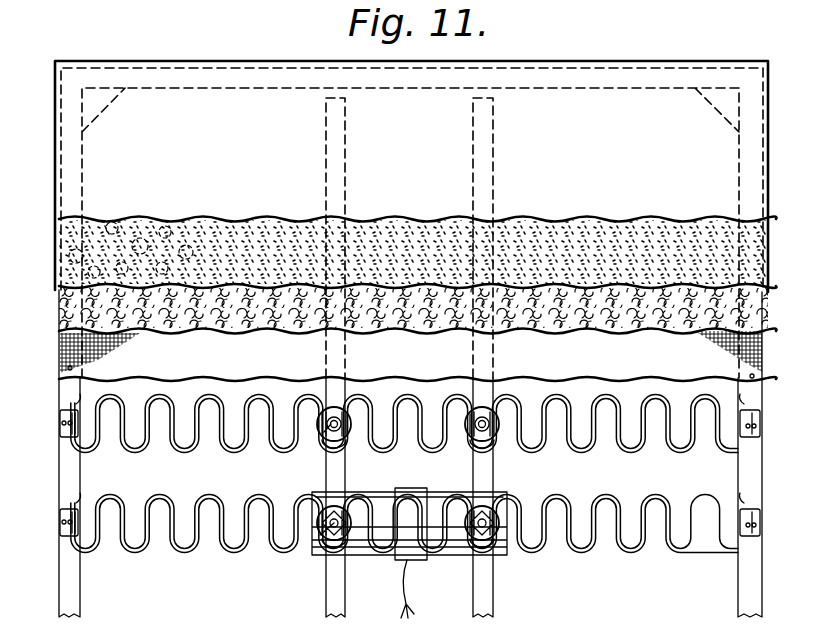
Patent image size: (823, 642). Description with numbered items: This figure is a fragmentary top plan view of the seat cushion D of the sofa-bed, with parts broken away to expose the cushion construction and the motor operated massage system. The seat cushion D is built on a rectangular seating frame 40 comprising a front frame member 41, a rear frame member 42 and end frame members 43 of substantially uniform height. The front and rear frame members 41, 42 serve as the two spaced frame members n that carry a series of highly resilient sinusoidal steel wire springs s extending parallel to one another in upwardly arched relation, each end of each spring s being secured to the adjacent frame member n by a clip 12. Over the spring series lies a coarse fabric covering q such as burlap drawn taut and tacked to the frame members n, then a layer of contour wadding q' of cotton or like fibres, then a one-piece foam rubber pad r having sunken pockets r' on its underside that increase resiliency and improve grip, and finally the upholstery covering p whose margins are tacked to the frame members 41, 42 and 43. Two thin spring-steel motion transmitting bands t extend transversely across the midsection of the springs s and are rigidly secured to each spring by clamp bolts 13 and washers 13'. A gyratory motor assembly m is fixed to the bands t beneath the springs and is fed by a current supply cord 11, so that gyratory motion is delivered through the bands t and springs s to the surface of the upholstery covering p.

The seating frame 40 is at (140, 60).
The end frame members 43 is at (275, 65).
The seat cushion D is at (650, 61).
The upholstery covering p is at (204, 122).
The bands t is at (347, 118).
The resilient rubber pad r is at (417, 226).
The sunken pockets r' is at (131, 230).
The coarse fabric material q is at (391, 354).
The contour wadding q' is at (417, 325).
The frame members n is at (62, 600).
The sinusoidal springs s is at (160, 496).
The clip 12 is at (60, 438).
The clamp bolt 13 is at (384, 505).
The washers 13' is at (405, 510).
The motor assembly m is at (442, 492).
The current supply cord 11 is at (410, 592).
The front frame member 41 is at (68, 476).
The rear frame member 42 is at (748, 478).